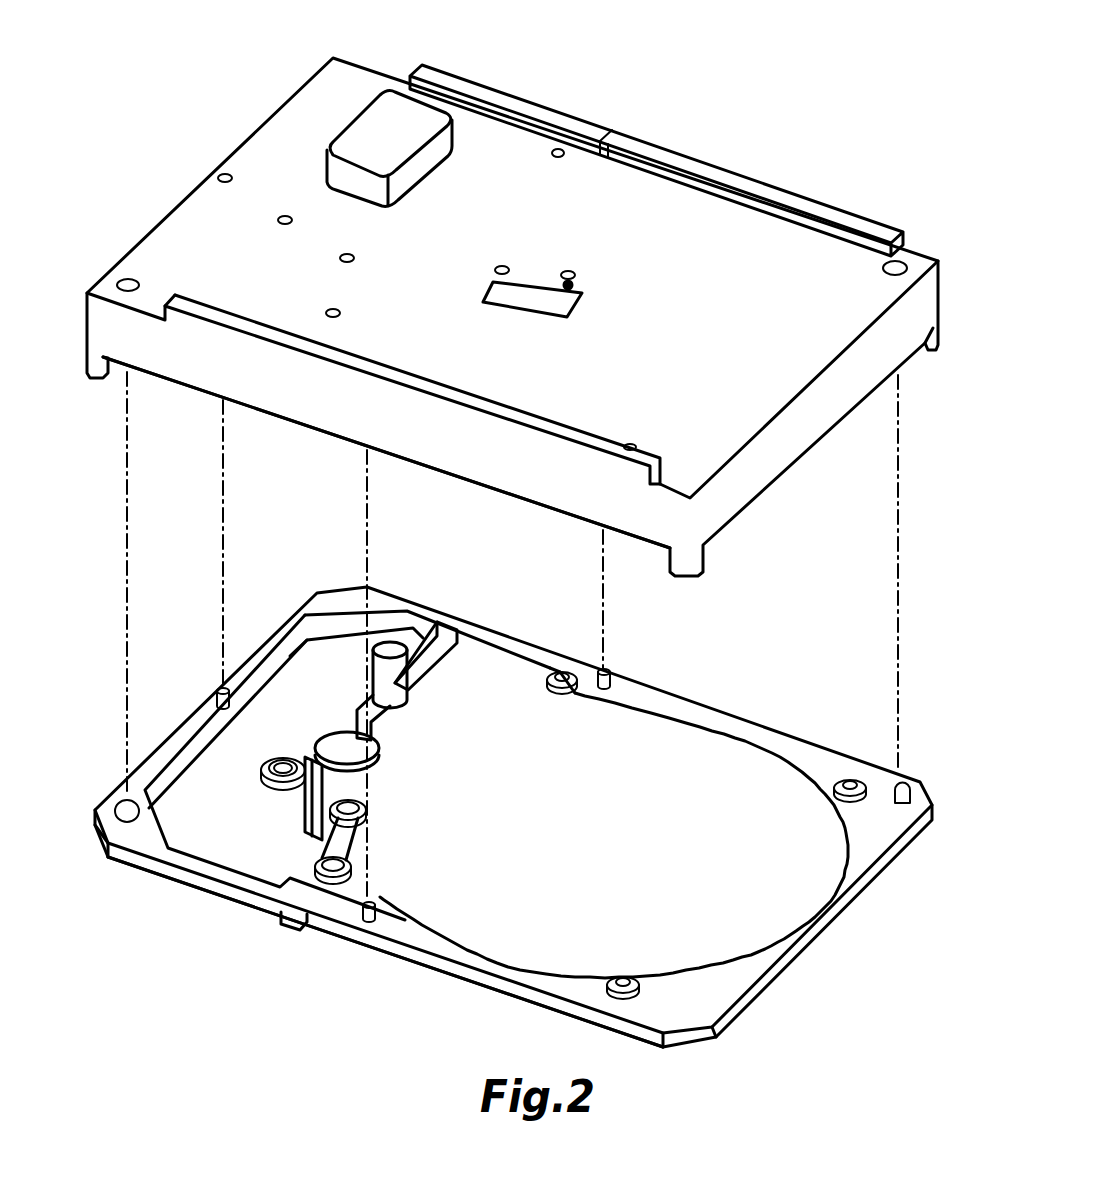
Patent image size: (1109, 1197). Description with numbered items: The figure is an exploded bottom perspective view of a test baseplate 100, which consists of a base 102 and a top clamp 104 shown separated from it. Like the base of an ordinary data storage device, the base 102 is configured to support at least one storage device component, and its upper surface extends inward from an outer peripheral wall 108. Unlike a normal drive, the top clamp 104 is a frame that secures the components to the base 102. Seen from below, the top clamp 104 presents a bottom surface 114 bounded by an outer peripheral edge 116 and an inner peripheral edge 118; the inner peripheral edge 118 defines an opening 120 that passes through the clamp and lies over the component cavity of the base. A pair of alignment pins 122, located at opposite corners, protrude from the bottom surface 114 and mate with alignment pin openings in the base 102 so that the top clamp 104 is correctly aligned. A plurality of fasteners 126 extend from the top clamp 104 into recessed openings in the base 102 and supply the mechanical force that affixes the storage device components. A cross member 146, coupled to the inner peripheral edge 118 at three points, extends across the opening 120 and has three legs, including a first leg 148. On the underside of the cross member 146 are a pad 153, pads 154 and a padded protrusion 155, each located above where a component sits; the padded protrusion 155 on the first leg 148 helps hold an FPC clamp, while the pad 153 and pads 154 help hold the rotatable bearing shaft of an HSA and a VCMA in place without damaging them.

The test baseplate 100 is at (752, 140).
The base 102 is at (225, 148).
The top clamp 104 is at (773, 985).
The outer peripheral wall 108 is at (317, 408).
The bottom surface 114 is at (680, 990).
The outer peripheral edge 116 is at (540, 995).
The inner peripheral edge 118 is at (693, 727).
The opening 120 is at (535, 900).
The alignment pins 122 is at (122, 798).
The fasteners 126 is at (220, 686).
The cross member 146 is at (352, 786).
The first leg 148 is at (428, 656).
The pad 153 is at (368, 752).
The pads 154 is at (262, 772).
The padded protrusion 155 is at (395, 683).